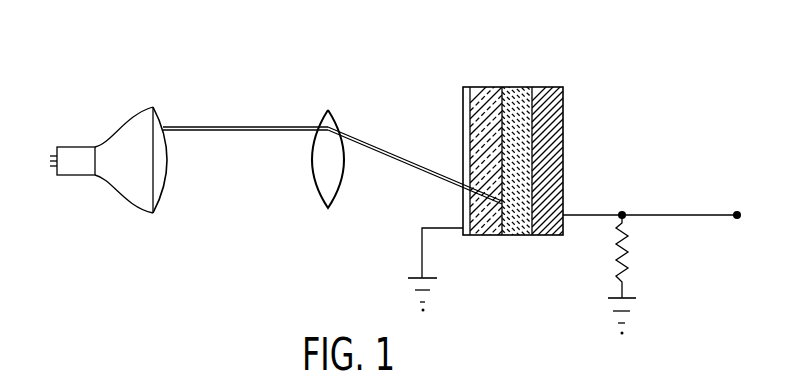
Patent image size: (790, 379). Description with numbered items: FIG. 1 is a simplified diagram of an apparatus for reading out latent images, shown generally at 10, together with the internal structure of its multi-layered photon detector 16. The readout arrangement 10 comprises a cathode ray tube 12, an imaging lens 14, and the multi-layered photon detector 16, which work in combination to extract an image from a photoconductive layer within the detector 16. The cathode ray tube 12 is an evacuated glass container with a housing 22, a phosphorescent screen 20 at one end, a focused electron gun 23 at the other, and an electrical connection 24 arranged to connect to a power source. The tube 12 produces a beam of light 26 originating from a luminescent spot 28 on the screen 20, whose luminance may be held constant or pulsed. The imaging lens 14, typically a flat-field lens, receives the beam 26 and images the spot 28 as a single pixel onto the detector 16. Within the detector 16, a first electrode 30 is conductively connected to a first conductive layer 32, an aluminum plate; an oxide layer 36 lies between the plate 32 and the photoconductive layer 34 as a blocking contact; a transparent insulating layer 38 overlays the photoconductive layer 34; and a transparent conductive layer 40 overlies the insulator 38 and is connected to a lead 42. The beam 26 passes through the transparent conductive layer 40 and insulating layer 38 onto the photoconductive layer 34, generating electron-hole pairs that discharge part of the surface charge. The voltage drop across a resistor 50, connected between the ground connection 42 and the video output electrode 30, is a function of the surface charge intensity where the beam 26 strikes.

The apparatus for reading out latent images 10 is at (268, 77).
The cathode ray tube 12 is at (127, 98).
The imaging lens 14 is at (332, 113).
The multi-layered photon detector 16 is at (539, 152).
The screen 20 is at (167, 203).
The housing 22 is at (127, 182).
The electron gun 23 is at (72, 153).
The electrical connection 24 is at (50, 152).
The beam of light 26 is at (214, 126).
The luminescent spot 28 is at (163, 126).
The first electrode 30 is at (582, 213).
The first conductive layer 32 is at (551, 87).
The photoconductive layer 34 is at (519, 93).
The oxide layer 36 is at (583, 100).
The transparent insulating layer 38 is at (484, 96).
The transparent conductive layer 40 is at (466, 97).
The lead 42 is at (422, 242).
The resistor 50 is at (626, 255).